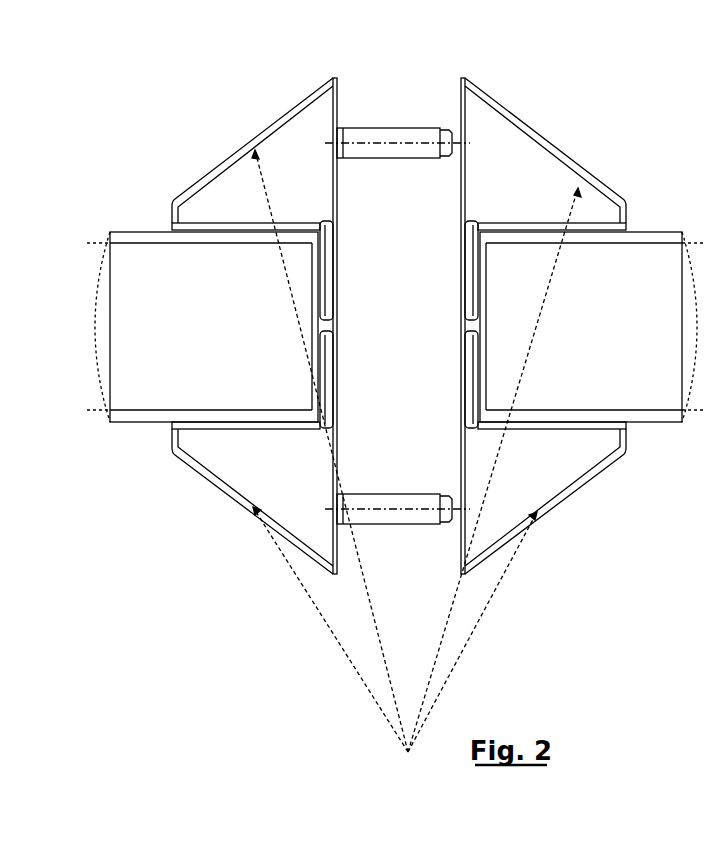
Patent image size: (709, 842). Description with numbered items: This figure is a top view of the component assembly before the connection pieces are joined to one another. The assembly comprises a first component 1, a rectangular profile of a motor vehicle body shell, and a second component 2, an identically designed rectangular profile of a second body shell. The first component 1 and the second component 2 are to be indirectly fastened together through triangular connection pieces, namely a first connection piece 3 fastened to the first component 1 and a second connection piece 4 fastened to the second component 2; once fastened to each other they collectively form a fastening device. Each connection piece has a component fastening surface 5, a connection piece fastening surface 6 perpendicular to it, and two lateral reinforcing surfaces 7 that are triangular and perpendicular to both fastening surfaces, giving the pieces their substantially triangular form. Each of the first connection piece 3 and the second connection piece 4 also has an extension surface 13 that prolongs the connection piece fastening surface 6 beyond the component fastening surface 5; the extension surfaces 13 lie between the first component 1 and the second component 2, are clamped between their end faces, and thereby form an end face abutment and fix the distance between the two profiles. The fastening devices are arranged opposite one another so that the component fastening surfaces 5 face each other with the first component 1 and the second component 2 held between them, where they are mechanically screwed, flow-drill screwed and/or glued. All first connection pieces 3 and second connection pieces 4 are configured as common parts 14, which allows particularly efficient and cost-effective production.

The first component 1 is at (155, 258).
The second component 2 is at (642, 260).
The first connection piece 3 is at (277, 145).
The second connection piece 4 is at (562, 173).
The component fastening surface 5 is at (233, 228).
The connection piece fastening surface 6 is at (332, 192).
The lateral reinforcing surface 7 is at (243, 482).
The extension surface 13 is at (333, 275).
The common parts 14 is at (416, 476).